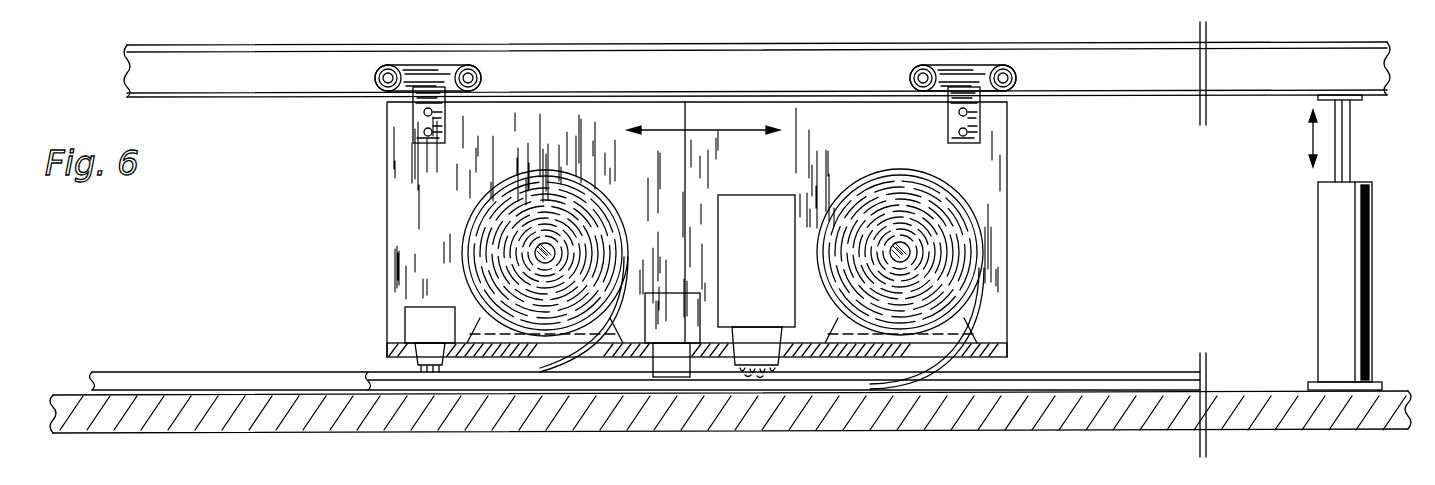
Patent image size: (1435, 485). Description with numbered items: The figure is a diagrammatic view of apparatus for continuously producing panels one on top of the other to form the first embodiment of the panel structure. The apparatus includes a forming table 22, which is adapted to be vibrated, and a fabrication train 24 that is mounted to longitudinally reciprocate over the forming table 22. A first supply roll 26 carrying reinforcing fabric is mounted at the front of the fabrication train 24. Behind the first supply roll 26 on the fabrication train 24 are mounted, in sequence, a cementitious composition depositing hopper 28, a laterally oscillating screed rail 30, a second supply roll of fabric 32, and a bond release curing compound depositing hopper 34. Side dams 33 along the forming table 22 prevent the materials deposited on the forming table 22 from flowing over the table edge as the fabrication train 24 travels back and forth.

The forming table 22 is at (312, 415).
The fabrication train 24 is at (1020, 158).
The first supply roll 26 is at (963, 228).
The cementitious composition depositing hopper 28 is at (778, 175).
The laterally oscillating screed rail 30 is at (673, 366).
The second supply roll of fabric 32 is at (577, 188).
The side dams 33 is at (258, 383).
The bond release curing compound depositing hopper 34 is at (417, 305).